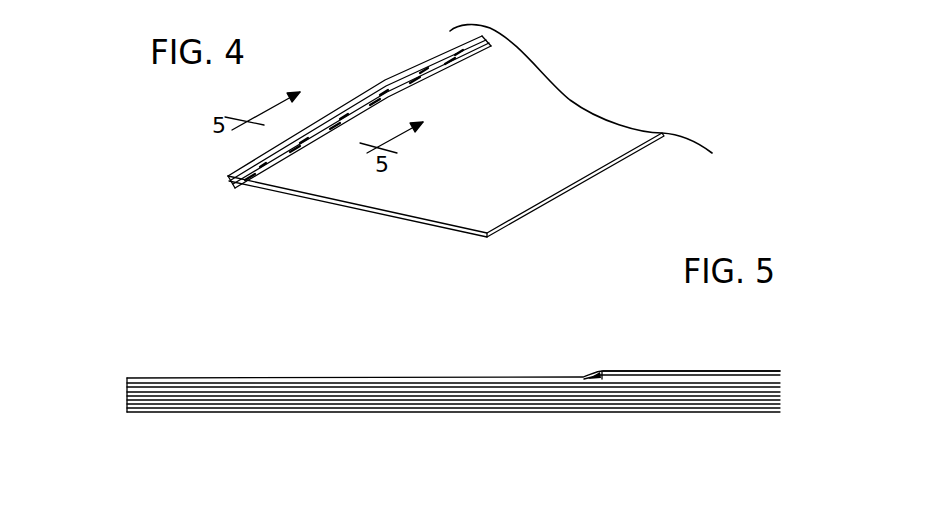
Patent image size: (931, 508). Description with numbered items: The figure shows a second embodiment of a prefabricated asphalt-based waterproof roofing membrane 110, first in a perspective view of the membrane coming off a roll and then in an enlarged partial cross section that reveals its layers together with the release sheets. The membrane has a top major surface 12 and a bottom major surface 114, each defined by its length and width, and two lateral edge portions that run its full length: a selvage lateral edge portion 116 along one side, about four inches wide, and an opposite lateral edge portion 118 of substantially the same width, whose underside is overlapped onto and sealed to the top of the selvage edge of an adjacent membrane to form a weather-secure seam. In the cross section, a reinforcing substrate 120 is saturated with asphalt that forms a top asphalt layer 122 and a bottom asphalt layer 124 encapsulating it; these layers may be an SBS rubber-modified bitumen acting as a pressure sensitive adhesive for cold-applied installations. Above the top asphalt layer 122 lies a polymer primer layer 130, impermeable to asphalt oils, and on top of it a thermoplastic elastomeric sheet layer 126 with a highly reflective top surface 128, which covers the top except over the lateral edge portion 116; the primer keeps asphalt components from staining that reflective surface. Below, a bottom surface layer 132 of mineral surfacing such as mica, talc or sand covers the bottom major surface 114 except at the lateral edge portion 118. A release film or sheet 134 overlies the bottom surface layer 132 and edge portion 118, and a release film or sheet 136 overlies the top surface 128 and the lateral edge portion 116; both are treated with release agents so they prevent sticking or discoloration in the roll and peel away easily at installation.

In FIG. 4, the prefabricated asphalt-based waterproof roofing membrane 110 is at (215, 228).
In FIG. 5, the prefabricated asphalt-based waterproof roofing membrane 110 is at (768, 323).
In FIG. 4, the top surface 12 is at (490, 139).
In FIG. 4, the bottom major surface 114 is at (362, 212).
In FIG. 4, the lateral edge portion 116 is at (388, 92).
In FIG. 5, the lateral edge portion 116 is at (383, 360).
In FIG. 4, the lateral edge portion 118 is at (567, 173).
In FIG. 5, the reinforcing substrate 120 is at (127, 394).
In FIG. 5, the top asphalt layer 122 is at (127, 384).
In FIG. 5, the bottom asphalt layer 124 is at (127, 400).
In FIG. 5, the top thermoplastic elastomeric sheet layer 126 is at (683, 375).
In FIG. 5, the highly reflective top surface 128 is at (755, 371).
In FIG. 5, the polymer primer layer 130 is at (657, 381).
In FIG. 5, the bottom surface layer 132 is at (177, 405).
In FIG. 5, the release film or sheet 134 is at (250, 412).
In FIG. 5, the release film or sheet 136 is at (200, 377).